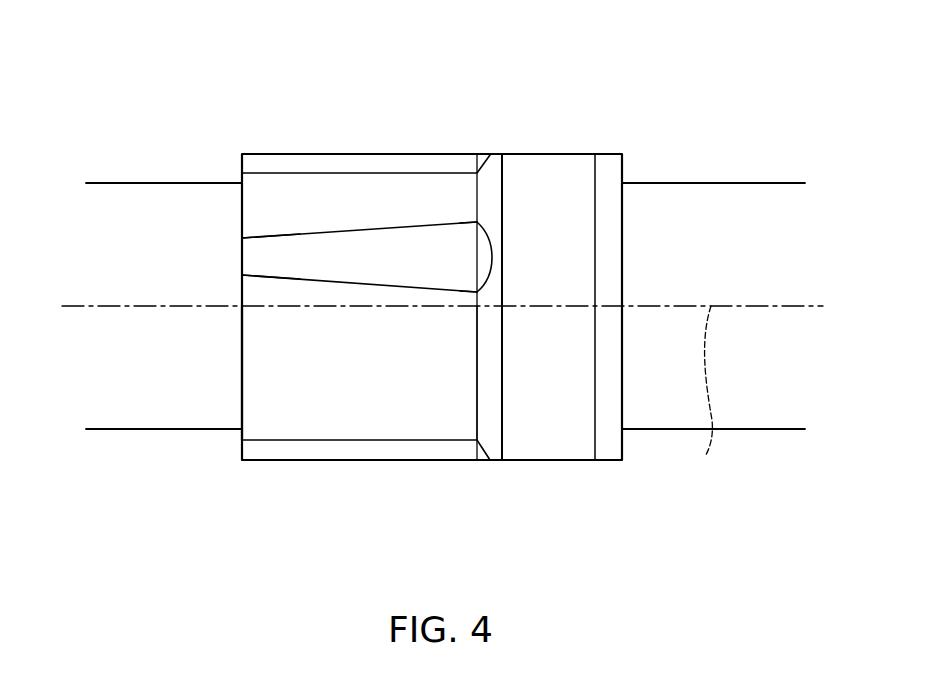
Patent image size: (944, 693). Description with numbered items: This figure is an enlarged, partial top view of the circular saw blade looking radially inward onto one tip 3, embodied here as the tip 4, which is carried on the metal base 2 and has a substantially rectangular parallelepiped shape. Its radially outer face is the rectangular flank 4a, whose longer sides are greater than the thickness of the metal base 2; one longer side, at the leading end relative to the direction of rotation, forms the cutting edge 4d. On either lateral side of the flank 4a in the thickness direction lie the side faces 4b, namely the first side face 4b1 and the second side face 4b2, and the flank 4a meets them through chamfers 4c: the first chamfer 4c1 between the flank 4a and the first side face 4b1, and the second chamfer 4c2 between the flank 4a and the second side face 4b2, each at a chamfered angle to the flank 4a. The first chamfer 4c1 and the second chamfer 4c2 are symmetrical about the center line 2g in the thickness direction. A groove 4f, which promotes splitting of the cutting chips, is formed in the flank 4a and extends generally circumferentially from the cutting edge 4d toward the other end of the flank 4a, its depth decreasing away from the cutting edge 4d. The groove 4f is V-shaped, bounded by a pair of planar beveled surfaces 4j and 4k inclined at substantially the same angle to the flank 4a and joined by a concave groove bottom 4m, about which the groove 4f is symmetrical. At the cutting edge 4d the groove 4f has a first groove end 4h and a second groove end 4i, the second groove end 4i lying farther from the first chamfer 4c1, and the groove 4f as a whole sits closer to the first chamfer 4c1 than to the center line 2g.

The metal base 2 is at (722, 168).
The center line 2g is at (707, 397).
The tip 3 is at (432, 307).
The tip 4 is at (436, 287).
The flank 4a is at (310, 382).
The side face 4b is at (371, 309).
The first side face 4b1 is at (412, 160).
The second side face 4b2 is at (403, 460).
The chamfer 4c is at (366, 307).
The first chamfer 4c1 is at (367, 168).
The second chamfer 4c2 is at (348, 449).
The cutting edge 4d is at (479, 388).
The groove 4f is at (404, 228).
The first groove end 4h is at (477, 222).
The second groove end 4i is at (477, 292).
The beveled surface 4j is at (296, 245).
The beveled surface 4k is at (303, 272).
The groove bottom 4m is at (492, 257).